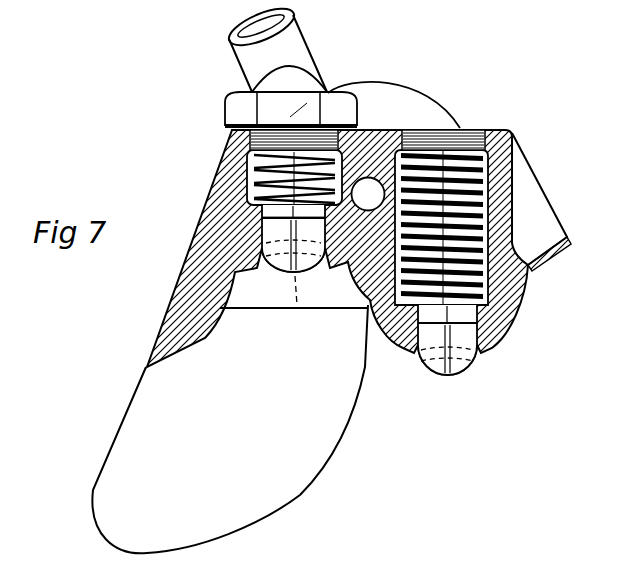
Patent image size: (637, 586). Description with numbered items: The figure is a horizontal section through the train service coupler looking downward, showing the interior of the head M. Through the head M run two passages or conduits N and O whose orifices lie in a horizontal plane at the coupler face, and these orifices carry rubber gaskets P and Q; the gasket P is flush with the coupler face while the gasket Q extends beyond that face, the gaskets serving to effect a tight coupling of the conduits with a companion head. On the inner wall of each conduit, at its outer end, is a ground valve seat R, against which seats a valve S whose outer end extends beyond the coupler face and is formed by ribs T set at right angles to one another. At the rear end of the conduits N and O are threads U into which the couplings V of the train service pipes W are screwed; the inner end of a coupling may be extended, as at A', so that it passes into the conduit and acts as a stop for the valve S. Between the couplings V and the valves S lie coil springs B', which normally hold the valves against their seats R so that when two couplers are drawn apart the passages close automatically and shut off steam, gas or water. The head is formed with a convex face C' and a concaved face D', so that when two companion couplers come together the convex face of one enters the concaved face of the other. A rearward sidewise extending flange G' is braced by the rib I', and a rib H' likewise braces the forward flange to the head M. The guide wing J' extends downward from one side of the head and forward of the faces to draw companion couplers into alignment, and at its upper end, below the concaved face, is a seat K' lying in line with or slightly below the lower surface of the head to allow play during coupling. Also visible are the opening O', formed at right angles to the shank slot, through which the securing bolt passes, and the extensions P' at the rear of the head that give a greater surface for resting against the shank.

The train service pipe W is at (230, 48).
The coupling V is at (340, 98).
The extended inner end of coupling A' is at (268, 101).
The opening O' is at (401, 140).
The extension P' is at (367, 119).
The threads U is at (477, 129).
The conduit O is at (521, 162).
The conduit N is at (250, 177).
The coil spring B' is at (375, 227).
The ground valve seat R is at (262, 217).
The rib I' is at (550, 199).
The rearward sidewise extending flange G' is at (569, 253).
The head M is at (517, 308).
The rib H' is at (327, 252).
The rib T is at (292, 276).
The concaved face D' is at (239, 318).
The rubber gasket Q is at (333, 270).
The seat K' is at (329, 355).
The convex face C' is at (367, 275).
The rubber gasket P is at (491, 361).
The valve S is at (470, 370).
The guide wing J' is at (222, 429).